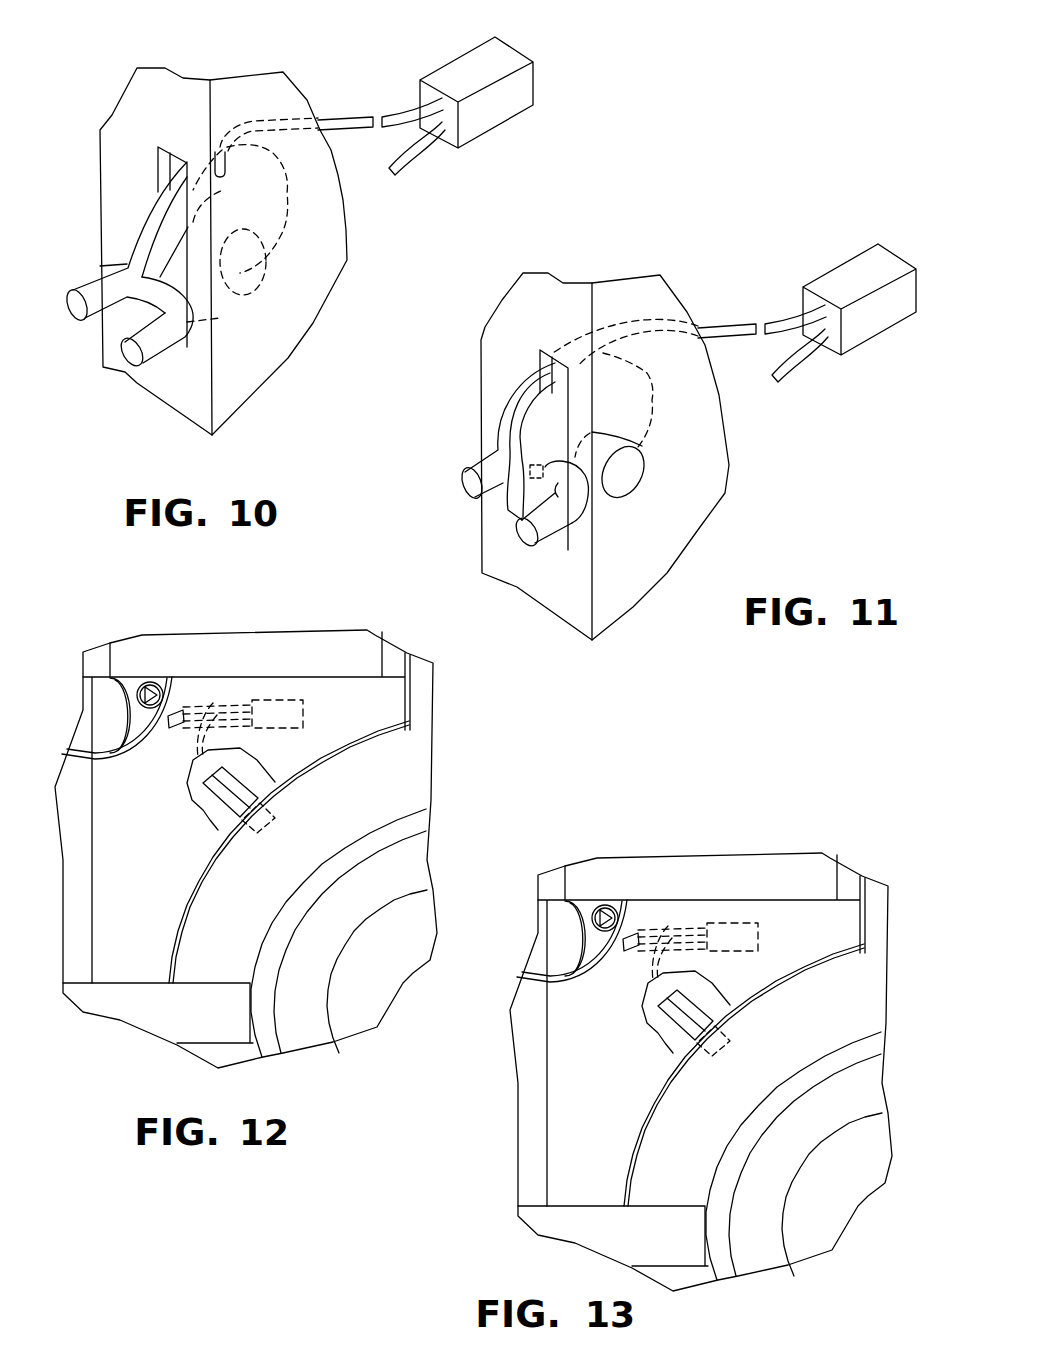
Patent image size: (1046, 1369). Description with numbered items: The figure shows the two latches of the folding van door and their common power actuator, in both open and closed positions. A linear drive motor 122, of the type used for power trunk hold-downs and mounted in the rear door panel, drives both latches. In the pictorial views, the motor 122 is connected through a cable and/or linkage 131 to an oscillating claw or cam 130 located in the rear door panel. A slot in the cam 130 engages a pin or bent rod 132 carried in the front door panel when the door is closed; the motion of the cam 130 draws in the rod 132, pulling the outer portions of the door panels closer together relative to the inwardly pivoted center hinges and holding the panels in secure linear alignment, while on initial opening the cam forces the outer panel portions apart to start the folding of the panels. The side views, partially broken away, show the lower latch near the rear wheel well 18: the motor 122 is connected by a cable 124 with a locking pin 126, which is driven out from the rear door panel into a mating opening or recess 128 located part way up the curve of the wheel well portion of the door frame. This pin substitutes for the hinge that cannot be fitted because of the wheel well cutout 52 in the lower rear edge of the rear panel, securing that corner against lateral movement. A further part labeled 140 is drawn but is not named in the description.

In FIG. 12, the fender edge 18 is at (197, 908).
In FIG. 13, the fender edge 18 is at (721, 1075).
In FIG. 12, the body panel 52 is at (203, 890).
In FIG. 13, the body panel 52 is at (701, 1072).
In FIG. 10, the electronic control module 122 is at (490, 115).
In FIG. 11, the electronic control module 122 is at (857, 320).
In FIG. 12, the electronic control module 122 is at (290, 710).
In FIG. 13, the electronic control module 122 is at (780, 933).
In FIG. 10, the cable 124 is at (407, 150).
In FIG. 11, the cable 124 is at (783, 362).
In FIG. 12, the cable 124 is at (195, 743).
In FIG. 13, the cable 124 is at (613, 968).
In FIG. 12, the sensor 126 is at (220, 787).
In FIG. 13, the sensor 126 is at (651, 1021).
In FIG. 12, the magnet 128 is at (262, 810).
In FIG. 13, the magnet 128 is at (763, 1027).
In FIG. 10, the tube 130 is at (147, 217).
In FIG. 11, the tube 130 is at (512, 493).
In FIG. 10, the wire 131 is at (397, 120).
In FIG. 11, the wire 131 is at (780, 322).
In FIG. 12, the wire 131 is at (213, 700).
In FIG. 13, the wire 131 is at (665, 889).
In FIG. 10, the pipe 132 is at (157, 343).
In FIG. 11, the pipe 132 is at (575, 505).
In FIG. 10, the block 140 is at (267, 350).
In FIG. 11, the block 140 is at (633, 592).